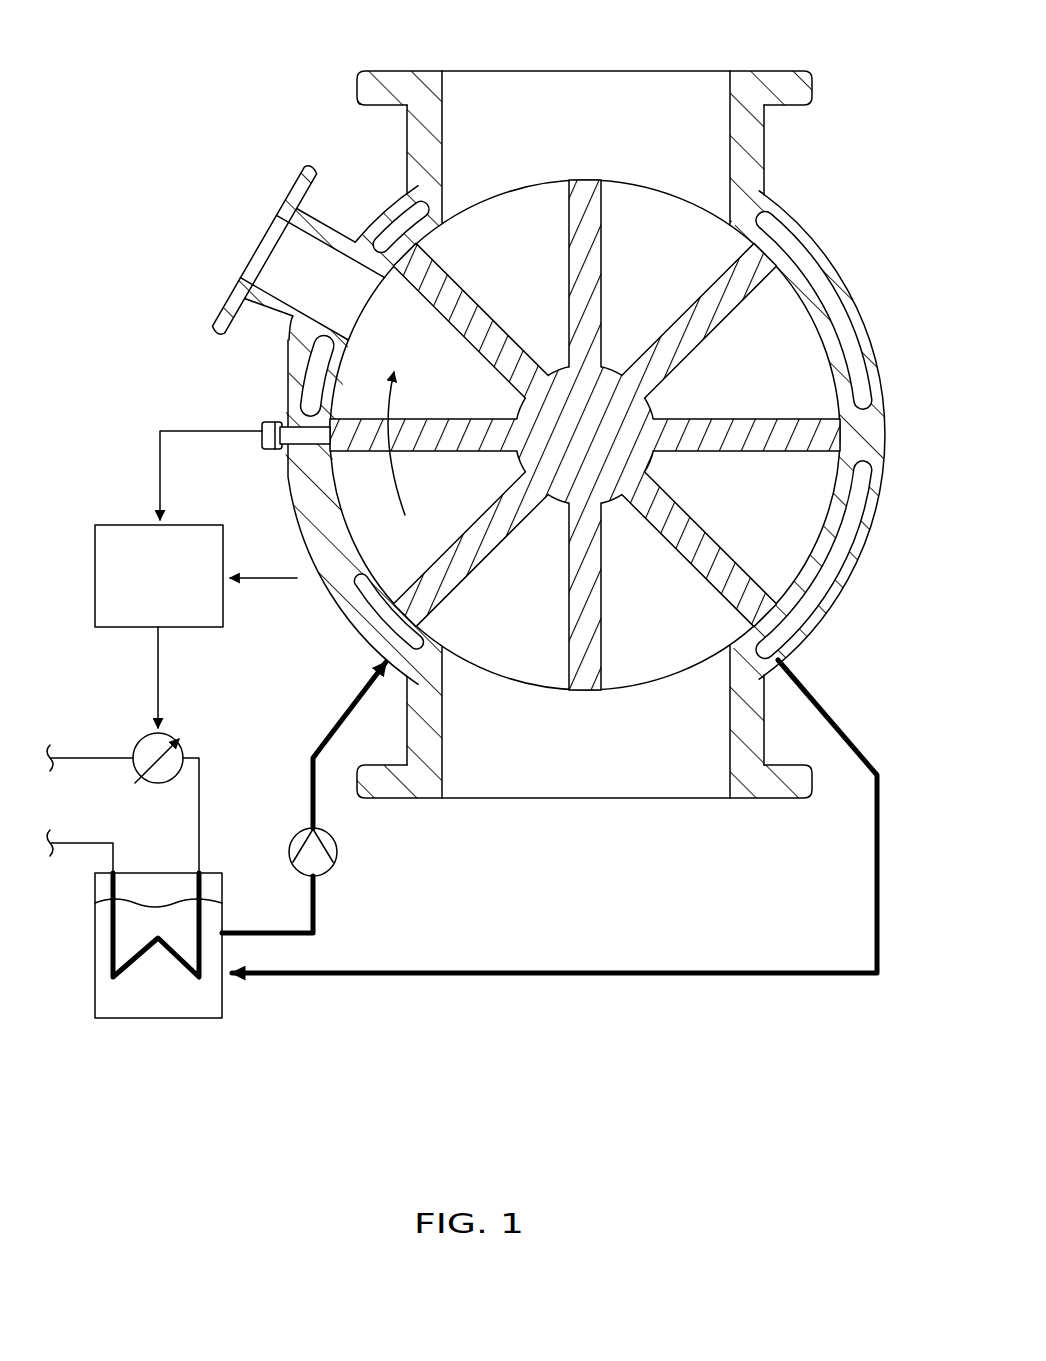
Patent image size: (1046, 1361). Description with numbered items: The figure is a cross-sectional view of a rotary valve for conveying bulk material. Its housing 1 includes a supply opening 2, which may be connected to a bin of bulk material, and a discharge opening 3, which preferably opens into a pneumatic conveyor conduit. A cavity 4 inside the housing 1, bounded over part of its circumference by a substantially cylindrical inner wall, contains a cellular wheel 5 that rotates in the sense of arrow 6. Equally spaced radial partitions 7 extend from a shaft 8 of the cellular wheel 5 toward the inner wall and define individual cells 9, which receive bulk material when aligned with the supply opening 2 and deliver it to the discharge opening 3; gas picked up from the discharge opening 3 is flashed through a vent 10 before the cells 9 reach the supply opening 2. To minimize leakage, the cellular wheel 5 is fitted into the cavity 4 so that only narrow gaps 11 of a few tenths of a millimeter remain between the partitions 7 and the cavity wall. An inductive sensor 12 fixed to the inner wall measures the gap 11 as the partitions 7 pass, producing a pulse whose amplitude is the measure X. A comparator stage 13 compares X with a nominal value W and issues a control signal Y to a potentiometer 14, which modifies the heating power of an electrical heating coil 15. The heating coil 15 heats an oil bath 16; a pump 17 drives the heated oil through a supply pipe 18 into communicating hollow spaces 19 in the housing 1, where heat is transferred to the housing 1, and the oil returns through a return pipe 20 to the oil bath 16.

The housing 1 is at (858, 196).
The supply opening 2 is at (639, 95).
The discharge opening 3 is at (676, 778).
The cavity 4 is at (812, 338).
The cellular wheel 5 is at (660, 398).
The arrow 6 is at (396, 488).
The partitions 7 is at (604, 292).
The shaft 8 is at (618, 494).
The cells 9 is at (585, 435).
The vent 10 is at (268, 250).
The gap 11 is at (835, 462).
The inductive sensor 12 is at (262, 426).
The comparator stage 13 is at (196, 626).
The potentiometer 14 is at (142, 737).
The heating coil 15 is at (180, 975).
The oil bath 16 is at (121, 1000).
The pump 17 is at (340, 870).
The supply pipe 18 is at (318, 738).
The hollow spaces 19 is at (393, 225).
The return pipe 20 is at (875, 892).